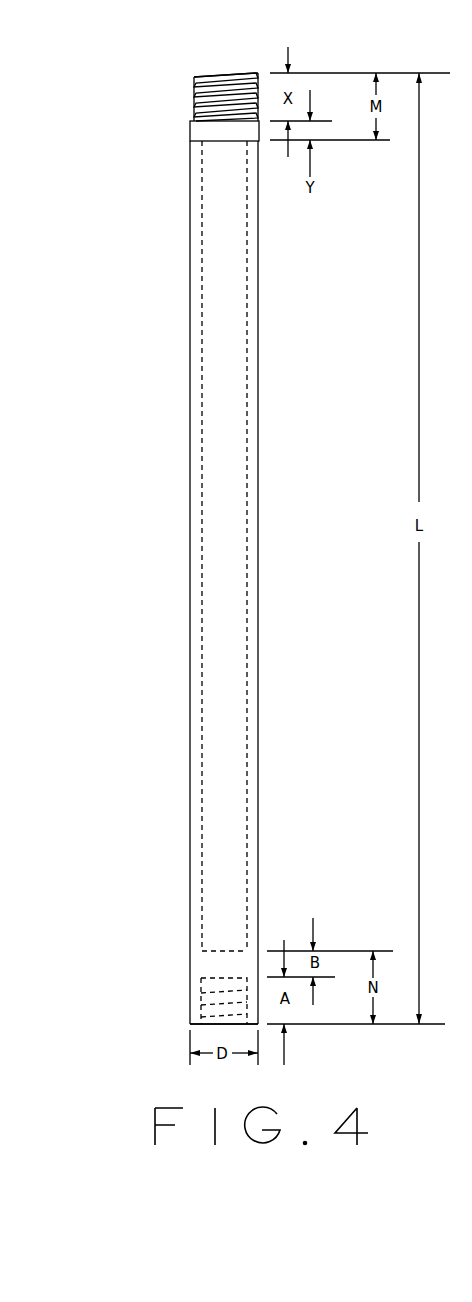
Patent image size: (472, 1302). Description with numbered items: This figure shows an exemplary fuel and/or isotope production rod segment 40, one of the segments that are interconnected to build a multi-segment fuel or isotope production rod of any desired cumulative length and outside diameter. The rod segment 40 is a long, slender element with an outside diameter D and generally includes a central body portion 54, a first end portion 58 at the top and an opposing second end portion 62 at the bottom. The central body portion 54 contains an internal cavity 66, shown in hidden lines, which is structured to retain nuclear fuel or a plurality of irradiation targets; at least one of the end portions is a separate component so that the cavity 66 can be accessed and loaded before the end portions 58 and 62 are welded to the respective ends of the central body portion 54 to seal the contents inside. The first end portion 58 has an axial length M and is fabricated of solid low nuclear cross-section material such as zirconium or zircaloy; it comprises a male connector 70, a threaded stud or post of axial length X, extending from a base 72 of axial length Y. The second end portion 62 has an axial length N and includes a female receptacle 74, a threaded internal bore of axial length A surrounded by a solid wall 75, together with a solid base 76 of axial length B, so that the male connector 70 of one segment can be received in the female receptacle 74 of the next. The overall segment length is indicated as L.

The rod segment 40 is at (76, 229).
The central body portion 54 is at (185, 143).
The first end portion 58 is at (186, 72).
The second end portion 62 is at (186, 954).
The internal cavity 66 is at (225, 388).
The male connector 70 is at (251, 72).
The base 72 is at (210, 130).
The female receptacle 74 is at (212, 1002).
The solid wall 75 is at (253, 1004).
The solid base 76 is at (203, 958).